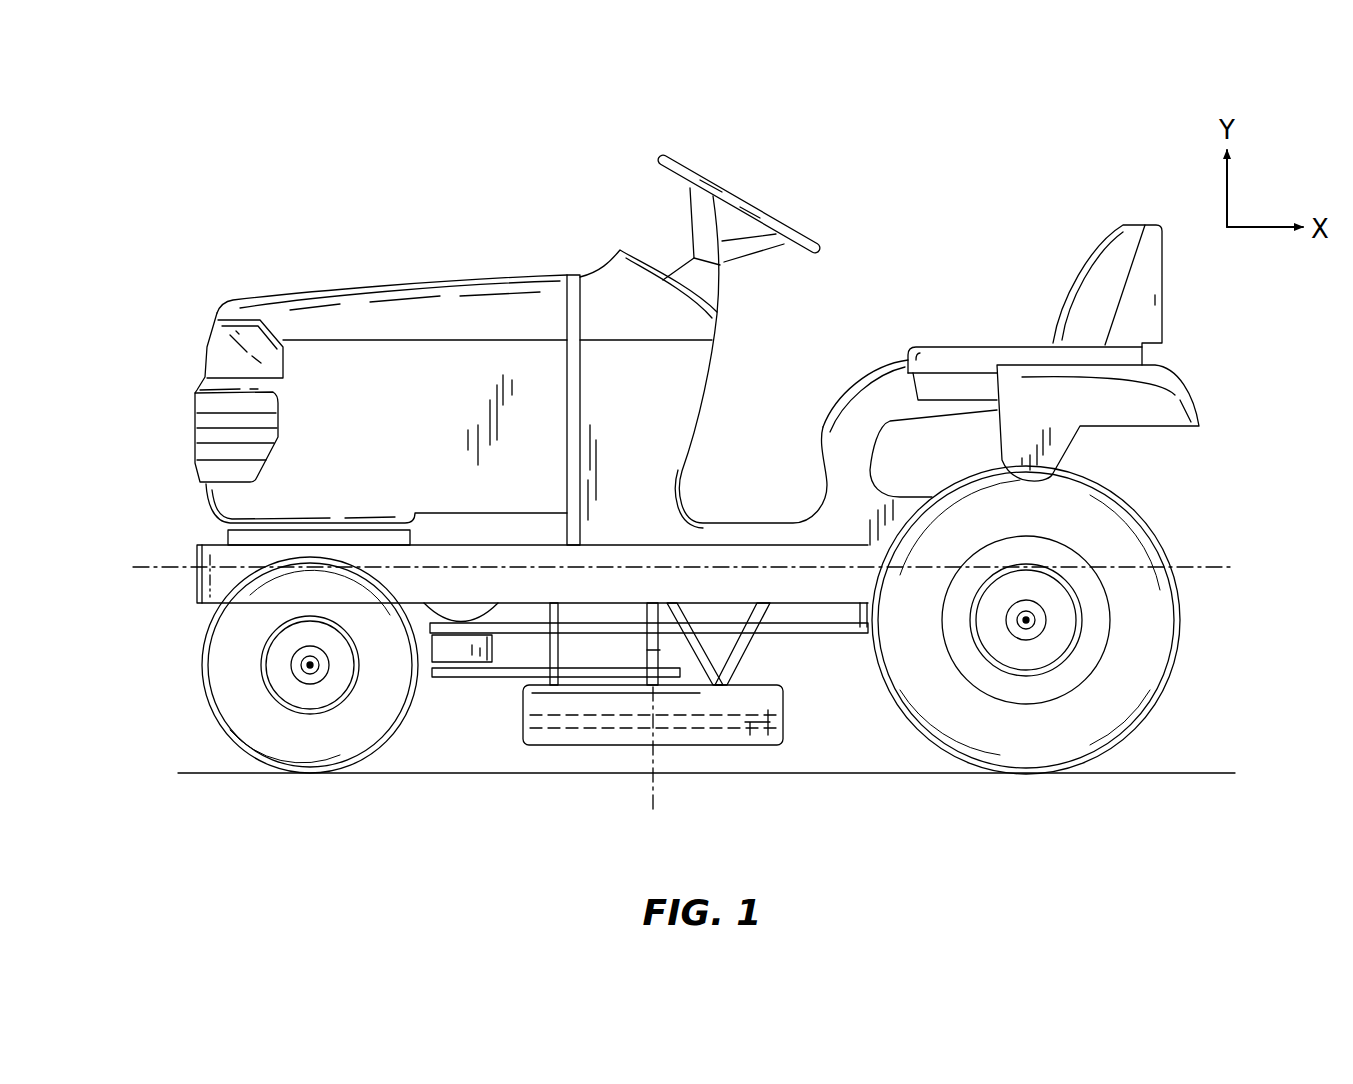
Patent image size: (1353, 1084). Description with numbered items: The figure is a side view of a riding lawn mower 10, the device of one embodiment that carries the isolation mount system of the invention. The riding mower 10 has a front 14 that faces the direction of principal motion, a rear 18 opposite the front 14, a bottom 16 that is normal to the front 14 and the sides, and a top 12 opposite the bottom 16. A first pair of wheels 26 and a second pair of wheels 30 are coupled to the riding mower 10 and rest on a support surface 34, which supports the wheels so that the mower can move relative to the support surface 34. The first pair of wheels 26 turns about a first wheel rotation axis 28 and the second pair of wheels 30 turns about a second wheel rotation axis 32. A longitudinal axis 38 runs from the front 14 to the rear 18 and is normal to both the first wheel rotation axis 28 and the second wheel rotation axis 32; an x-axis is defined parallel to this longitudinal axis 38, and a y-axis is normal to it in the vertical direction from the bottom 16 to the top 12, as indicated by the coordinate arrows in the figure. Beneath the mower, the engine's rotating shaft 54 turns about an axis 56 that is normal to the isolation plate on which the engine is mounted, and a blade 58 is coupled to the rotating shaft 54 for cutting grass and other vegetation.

The riding lawn mower 10 is at (375, 158).
The top 12 is at (757, 160).
The front 14 is at (165, 453).
The bottom 16 is at (578, 793).
The rear 18 is at (1222, 460).
The first pair of wheels 26 is at (295, 735).
The first wheel rotation axis 28 is at (310, 665).
The second pair of wheels 30 is at (1067, 733).
The second wheel rotation axis 32 is at (1026, 620).
The support surface 34 is at (1163, 773).
The longitudinal axis 38 is at (168, 573).
The rotating shaft 54 is at (660, 650).
The axis 56 is at (655, 748).
The blade 58 is at (565, 742).